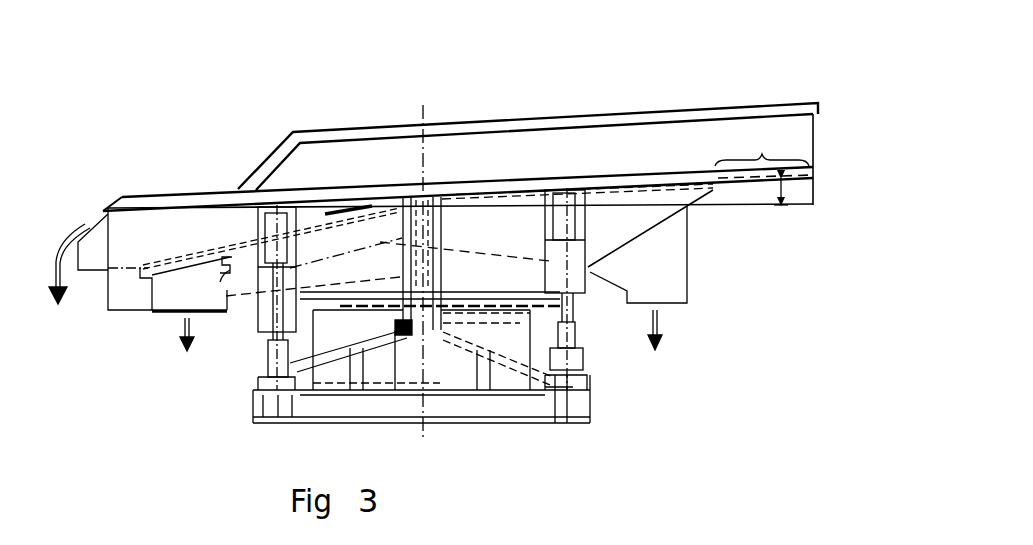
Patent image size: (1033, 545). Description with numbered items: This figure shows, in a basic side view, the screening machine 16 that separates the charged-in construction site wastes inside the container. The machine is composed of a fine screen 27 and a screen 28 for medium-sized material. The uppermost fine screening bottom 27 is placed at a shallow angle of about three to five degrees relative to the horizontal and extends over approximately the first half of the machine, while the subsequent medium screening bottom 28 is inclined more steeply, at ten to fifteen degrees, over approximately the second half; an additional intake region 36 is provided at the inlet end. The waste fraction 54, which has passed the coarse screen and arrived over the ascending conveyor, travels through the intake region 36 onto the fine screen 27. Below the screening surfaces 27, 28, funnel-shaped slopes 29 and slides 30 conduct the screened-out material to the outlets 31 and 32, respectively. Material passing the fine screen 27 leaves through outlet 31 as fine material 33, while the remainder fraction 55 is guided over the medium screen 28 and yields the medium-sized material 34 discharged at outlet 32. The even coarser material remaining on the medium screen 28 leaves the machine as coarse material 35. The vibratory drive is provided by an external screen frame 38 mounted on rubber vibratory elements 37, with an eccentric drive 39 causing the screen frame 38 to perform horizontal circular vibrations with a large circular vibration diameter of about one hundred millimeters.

The screening machine 16 is at (152, 76).
The fraction 54 is at (888, 10).
The remainder fraction 55 is at (357, 210).
The fine screen 27 is at (620, 189).
The intake region 36 is at (768, 174).
The medium screen 28 is at (175, 253).
The funnel-shaped slopes 29 is at (471, 243).
The slides 30 is at (311, 262).
The eccentric drive 39 is at (433, 268).
The outlet 31 is at (676, 291).
The coarse material 35 is at (56, 277).
The screen frame 38 is at (106, 299).
The outlet 32 is at (172, 294).
The medium-sized material 34 is at (201, 339).
The rubber vibratory element 37 is at (268, 337).
The fine material 33 is at (673, 338).